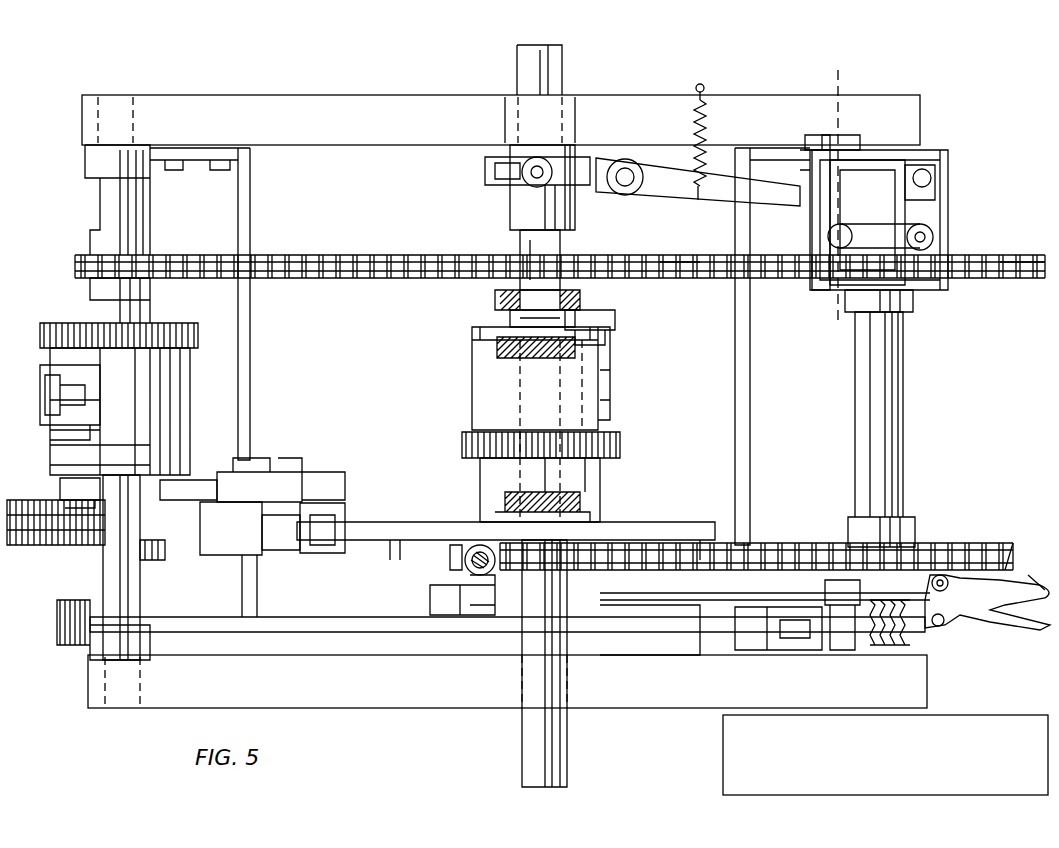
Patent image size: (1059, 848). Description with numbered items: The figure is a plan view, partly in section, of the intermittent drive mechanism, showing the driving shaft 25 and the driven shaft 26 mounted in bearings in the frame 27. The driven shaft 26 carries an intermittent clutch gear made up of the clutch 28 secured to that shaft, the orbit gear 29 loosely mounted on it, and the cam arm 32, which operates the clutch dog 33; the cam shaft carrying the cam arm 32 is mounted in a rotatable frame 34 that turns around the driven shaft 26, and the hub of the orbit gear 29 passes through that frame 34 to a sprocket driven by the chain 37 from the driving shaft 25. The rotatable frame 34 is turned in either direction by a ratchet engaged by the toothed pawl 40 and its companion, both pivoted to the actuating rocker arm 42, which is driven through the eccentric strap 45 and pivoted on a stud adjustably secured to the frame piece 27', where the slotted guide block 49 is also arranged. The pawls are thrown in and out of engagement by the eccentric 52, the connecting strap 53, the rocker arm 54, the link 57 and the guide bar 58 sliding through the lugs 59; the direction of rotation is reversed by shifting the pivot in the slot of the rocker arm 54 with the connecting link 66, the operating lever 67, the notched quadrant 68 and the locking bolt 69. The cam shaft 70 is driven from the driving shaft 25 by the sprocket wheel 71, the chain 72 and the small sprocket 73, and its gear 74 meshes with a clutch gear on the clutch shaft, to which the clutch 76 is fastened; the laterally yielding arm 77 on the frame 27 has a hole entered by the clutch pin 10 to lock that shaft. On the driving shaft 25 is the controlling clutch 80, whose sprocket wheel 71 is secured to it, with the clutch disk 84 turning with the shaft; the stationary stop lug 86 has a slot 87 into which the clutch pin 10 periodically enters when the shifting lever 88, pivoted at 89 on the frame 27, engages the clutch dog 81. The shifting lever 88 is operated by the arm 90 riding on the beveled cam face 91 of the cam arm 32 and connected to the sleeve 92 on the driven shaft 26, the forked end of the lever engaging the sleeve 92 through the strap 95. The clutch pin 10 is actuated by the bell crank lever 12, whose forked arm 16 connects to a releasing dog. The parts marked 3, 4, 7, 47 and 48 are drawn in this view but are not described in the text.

The base 3 is at (885, 755).
The worm gear 4 is at (20, 548).
The section line 7- 7 is at (835, 192).
The clutch pin 10 is at (45, 388).
The bell crank lever 12 is at (935, 237).
The forked arm 16 is at (940, 176).
The driving shaft 25 is at (895, 416).
The driven shaft 26 is at (568, 732).
The frame 27 is at (605, 424).
The frame piece 27' is at (268, 463).
The clutch 28 is at (480, 400).
The orbit gear 29 is at (622, 445).
The cam arm 32 is at (575, 348).
The clutch dog 33 is at (478, 348).
The rotatable frame 34 is at (600, 503).
The chain 37 is at (768, 545).
The toothed pawl 40 is at (710, 522).
The actuating rocker arm 42 is at (312, 507).
The eccentric strap 45 is at (160, 552).
The block 47 is at (285, 530).
The block 48 is at (288, 540).
The slotted guide block 49 is at (305, 475).
The eccentric 52 is at (70, 648).
The connecting strap 53 is at (308, 620).
The rocker arm 54 is at (795, 630).
The link 57 is at (440, 597).
The guide bar 58 is at (465, 563).
The lugs 59 is at (448, 548).
The connecting link 66 is at (840, 607).
The operating lever 67 is at (1028, 575).
The notched quadrant 68 is at (875, 650).
The locking bolt 69 is at (908, 632).
The cam shaft 70 is at (118, 572).
The sprocket wheel 71 is at (1000, 278).
The chain 72 is at (680, 278).
The small sprocket 73 is at (75, 266).
The gear 74 is at (175, 325).
The clutch 76 is at (165, 400).
The laterally yielding arm 77 is at (60, 490).
The controlling clutch 80 is at (948, 210).
The clutch dog 81 is at (880, 178).
The clutch disk 84 is at (913, 298).
The stationary stop lug 86 is at (815, 147).
The slot 87 is at (835, 147).
The shifting lever 88 is at (700, 195).
The pivot 89 is at (625, 192).
The arm 90 is at (540, 240).
The beveled cam face 91 is at (510, 318).
The sleeve 92 is at (515, 210).
The strap 95 is at (485, 172).